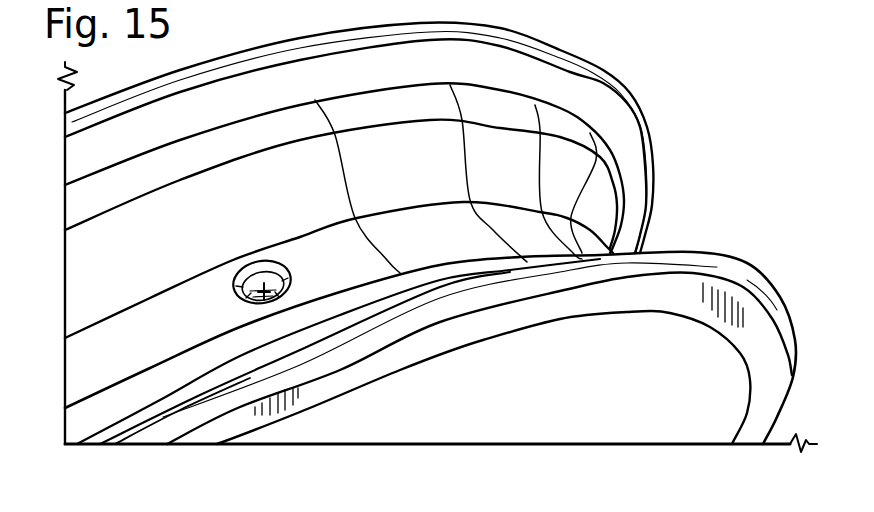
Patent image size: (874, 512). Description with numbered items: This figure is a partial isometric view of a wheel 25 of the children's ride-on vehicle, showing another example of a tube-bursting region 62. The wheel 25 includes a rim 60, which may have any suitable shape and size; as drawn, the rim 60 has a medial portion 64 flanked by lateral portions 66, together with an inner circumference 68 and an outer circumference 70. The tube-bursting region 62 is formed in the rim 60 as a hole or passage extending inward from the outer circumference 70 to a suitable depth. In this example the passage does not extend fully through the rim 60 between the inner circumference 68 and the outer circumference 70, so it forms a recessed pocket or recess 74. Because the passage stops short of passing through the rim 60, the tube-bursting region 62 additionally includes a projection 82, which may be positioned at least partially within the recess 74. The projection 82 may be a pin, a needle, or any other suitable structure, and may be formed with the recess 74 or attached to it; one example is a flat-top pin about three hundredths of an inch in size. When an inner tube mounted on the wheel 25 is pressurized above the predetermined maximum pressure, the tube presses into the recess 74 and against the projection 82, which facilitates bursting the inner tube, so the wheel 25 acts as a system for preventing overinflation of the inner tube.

The wheel 25 is at (720, 148).
The rim 60 is at (772, 382).
The tube-bursting region 62 is at (276, 256).
The medial portion 64 is at (138, 352).
The lateral portion 66 is at (92, 283).
The inner circumference 68 is at (666, 320).
The outer circumference 70 is at (754, 264).
The recess 74 is at (250, 273).
The projection 82 is at (264, 288).